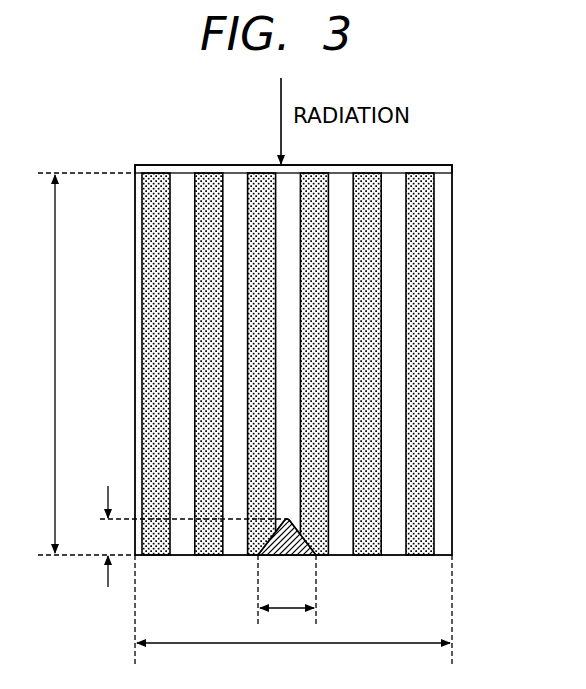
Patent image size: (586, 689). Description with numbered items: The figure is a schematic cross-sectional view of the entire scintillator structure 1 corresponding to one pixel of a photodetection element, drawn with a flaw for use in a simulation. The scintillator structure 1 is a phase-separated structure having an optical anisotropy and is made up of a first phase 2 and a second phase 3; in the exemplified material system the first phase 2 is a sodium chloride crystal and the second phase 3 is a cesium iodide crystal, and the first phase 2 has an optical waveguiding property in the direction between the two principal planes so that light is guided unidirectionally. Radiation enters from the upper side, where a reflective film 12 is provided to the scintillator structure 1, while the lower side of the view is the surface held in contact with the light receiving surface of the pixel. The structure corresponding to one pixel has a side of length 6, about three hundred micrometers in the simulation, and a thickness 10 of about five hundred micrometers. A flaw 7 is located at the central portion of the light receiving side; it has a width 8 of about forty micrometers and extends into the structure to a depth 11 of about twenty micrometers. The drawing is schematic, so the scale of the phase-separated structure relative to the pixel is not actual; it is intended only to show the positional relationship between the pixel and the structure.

The scintillator structure 1 is at (453, 355).
The first phase 2 is at (393, 530).
The second phase 3 is at (422, 523).
The length 6 is at (293, 616).
The flaw 7 is at (296, 540).
The width 8 is at (287, 590).
The thickness 10 is at (78, 364).
The depth 11 is at (183, 536).
The reflective film 12 is at (452, 170).